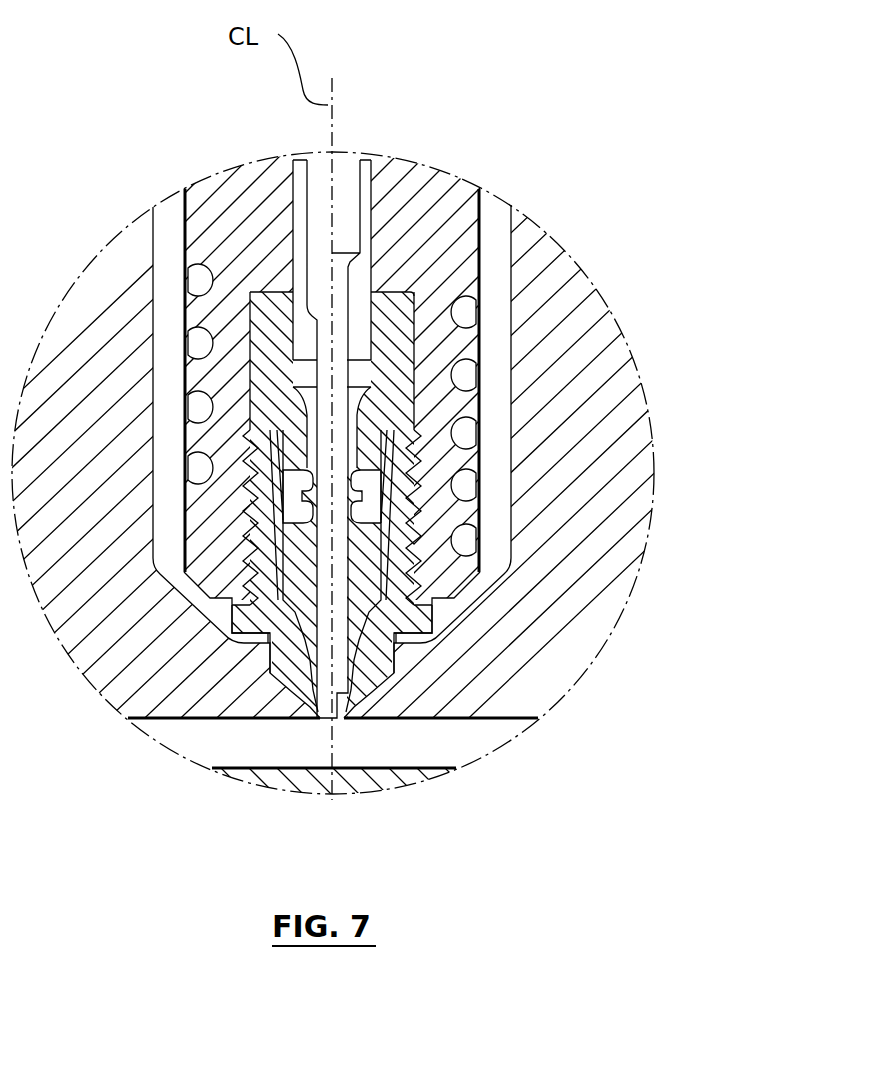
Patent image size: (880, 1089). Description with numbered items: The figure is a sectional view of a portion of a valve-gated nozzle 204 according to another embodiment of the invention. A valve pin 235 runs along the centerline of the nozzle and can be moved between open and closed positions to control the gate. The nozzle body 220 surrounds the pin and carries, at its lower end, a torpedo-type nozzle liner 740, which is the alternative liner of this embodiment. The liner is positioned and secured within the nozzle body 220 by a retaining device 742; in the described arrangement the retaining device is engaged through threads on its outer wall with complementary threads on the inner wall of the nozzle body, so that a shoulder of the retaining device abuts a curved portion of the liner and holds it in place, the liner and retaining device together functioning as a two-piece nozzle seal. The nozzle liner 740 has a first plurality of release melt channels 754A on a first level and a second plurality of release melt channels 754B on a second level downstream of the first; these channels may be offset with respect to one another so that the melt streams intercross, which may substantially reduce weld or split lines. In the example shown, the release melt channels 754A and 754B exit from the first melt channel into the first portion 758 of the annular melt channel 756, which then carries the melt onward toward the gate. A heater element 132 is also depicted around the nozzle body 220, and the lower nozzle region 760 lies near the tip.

The valve-gated nozzle 204 is at (450, 220).
The nozzle body 220 is at (408, 190).
The valve pin 235 is at (350, 187).
The heater coil 132 is at (477, 307).
The nozzle liner 740 is at (400, 337).
The release melt channels 754A is at (372, 480).
The first portion 758 is at (383, 497).
The release melt channels 754B is at (365, 510).
The annular melt channel 756 is at (395, 575).
The tip retainer 760 is at (385, 613).
The retaining device 742 is at (388, 640).